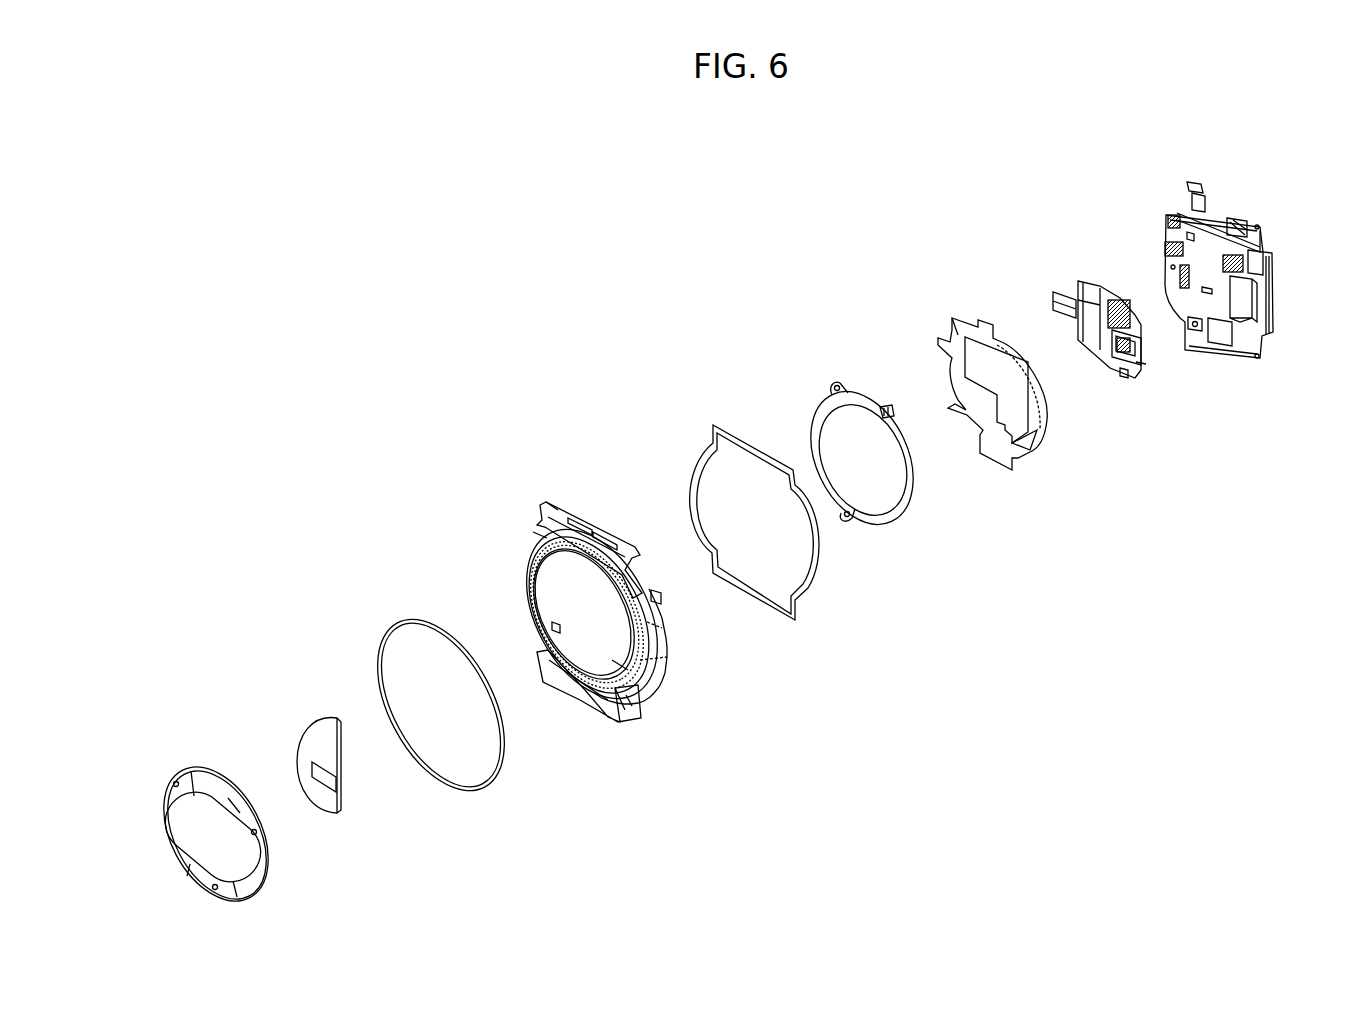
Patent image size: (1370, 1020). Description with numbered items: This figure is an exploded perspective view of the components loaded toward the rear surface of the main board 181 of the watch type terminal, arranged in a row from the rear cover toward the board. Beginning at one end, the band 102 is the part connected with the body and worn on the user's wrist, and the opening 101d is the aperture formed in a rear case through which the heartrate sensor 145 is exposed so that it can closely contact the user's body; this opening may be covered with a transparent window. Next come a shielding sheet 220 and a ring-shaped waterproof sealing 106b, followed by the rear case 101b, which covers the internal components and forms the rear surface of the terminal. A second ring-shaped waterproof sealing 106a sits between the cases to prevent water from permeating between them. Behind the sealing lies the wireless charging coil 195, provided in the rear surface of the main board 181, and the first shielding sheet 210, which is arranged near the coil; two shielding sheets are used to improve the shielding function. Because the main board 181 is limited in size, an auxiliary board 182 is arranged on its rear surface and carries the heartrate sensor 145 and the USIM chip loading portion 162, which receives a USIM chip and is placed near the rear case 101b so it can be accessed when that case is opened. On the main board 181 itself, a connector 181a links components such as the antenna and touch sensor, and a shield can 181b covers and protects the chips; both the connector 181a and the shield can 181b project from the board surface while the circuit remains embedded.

The band 102 is at (241, 801).
The opening 101d is at (250, 859).
The shielding sheet 220 is at (311, 701).
The waterproof sealing 106b is at (398, 605).
The rear case 101b is at (541, 492).
The waterproof sealing 106a is at (717, 409).
The wireless charging coil 195 is at (825, 366).
The first shielding sheet 210 is at (952, 305).
The auxiliary board 182 is at (1126, 320).
The USIM chip loading portion 162 is at (1090, 330).
The heartrate sensor 145 is at (1128, 346).
The main board 181 is at (1212, 281).
The connector 181a is at (1200, 185).
The shield can 181b is at (1218, 303).